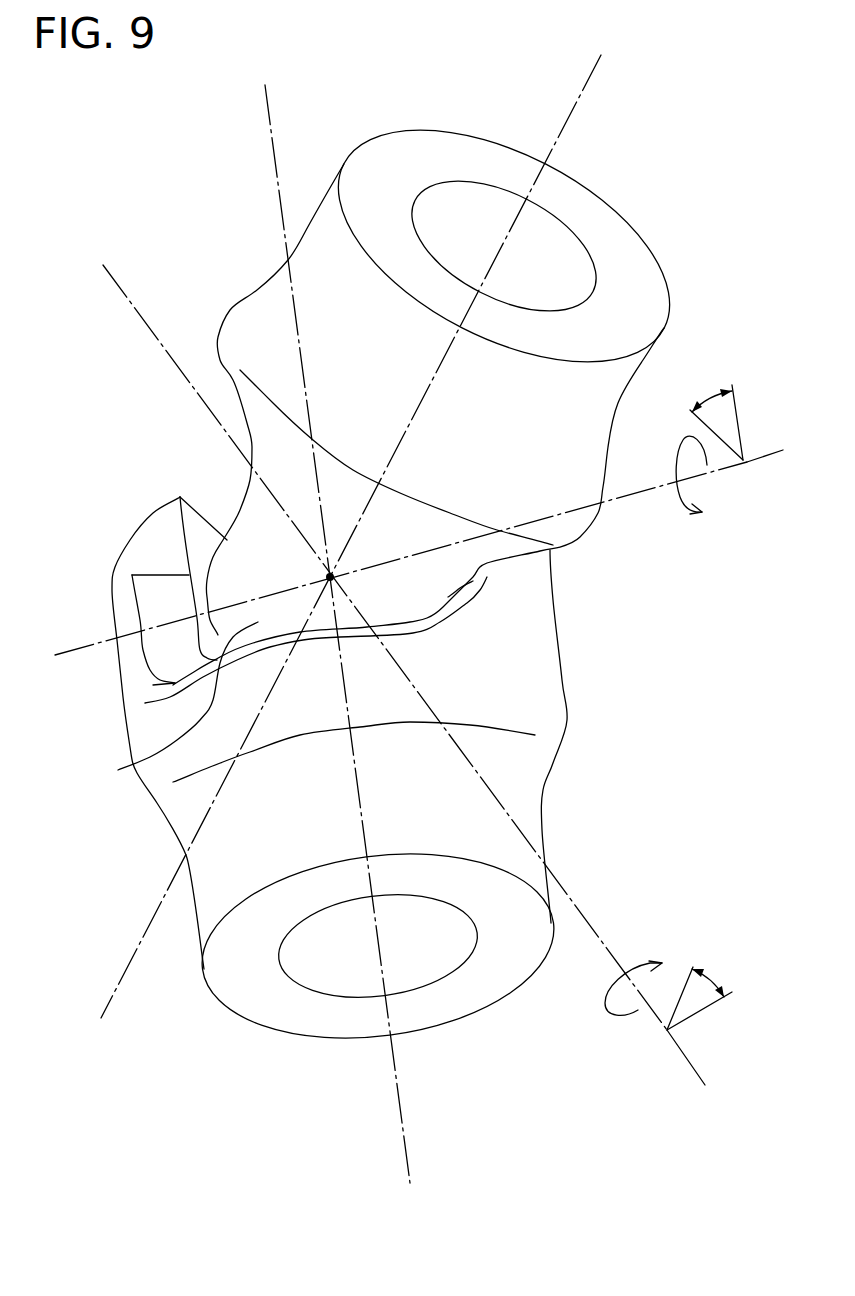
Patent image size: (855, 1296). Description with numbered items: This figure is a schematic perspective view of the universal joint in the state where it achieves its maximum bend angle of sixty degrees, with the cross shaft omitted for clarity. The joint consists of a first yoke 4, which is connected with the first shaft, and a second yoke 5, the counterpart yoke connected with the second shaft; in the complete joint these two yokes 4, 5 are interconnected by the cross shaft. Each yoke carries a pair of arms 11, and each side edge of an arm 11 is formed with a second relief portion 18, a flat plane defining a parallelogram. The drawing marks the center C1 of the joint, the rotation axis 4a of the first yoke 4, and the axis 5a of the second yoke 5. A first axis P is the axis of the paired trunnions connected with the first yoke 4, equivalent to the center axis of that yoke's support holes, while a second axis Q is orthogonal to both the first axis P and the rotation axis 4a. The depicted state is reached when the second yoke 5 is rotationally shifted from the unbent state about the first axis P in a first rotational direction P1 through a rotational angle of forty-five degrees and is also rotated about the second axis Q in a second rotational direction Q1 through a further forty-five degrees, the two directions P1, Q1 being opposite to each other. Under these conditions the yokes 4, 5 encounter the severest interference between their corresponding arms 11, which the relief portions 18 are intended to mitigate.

The first yoke 4 is at (522, 650).
The rotation axis of the first yoke 4a is at (405, 1142).
The second yoke 5 is at (598, 387).
The axis of the second yoke 5a is at (583, 93).
The arms 11 is at (138, 552).
The second relief portion 18 is at (153, 612).
The center of the joint C1 is at (318, 567).
The first axis P is at (767, 463).
The first rotational direction P1 is at (677, 493).
The second axis Q is at (690, 1058).
The second rotational direction Q1 is at (608, 1017).